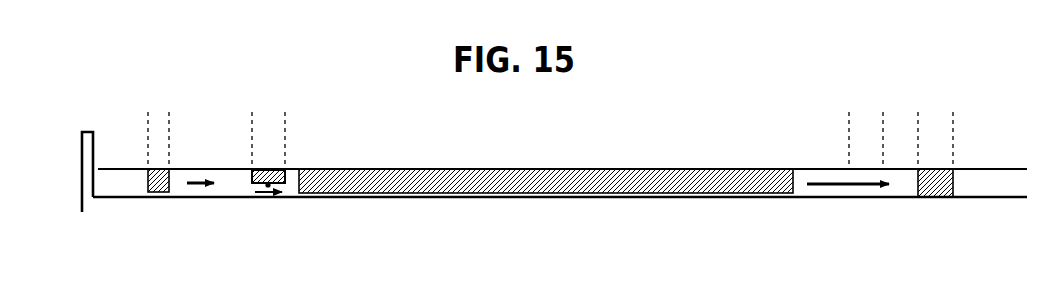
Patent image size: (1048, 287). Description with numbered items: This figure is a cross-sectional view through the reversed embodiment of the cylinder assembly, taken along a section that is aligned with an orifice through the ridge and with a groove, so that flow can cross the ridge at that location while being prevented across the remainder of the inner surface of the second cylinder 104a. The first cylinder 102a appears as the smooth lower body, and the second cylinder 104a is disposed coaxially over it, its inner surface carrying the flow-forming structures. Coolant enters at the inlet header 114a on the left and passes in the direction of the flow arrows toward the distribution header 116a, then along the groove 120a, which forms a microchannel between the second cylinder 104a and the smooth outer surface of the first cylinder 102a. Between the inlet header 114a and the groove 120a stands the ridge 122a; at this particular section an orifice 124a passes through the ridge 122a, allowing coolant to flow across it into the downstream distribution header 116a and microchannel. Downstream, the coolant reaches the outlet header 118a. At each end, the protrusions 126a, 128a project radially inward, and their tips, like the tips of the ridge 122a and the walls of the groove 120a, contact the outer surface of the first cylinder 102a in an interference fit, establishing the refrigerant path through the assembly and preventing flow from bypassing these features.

The first cylinder 102a is at (585, 198).
The second cylinder 104a is at (597, 167).
The inlet header 114a is at (202, 168).
The distribution header 116a is at (293, 170).
The outlet header 118a is at (900, 175).
The grooves 120a is at (488, 182).
The ridge 122a is at (273, 170).
The orifices 124a is at (268, 188).
The protrusion 126a is at (159, 168).
The protrusion 128a is at (938, 167).